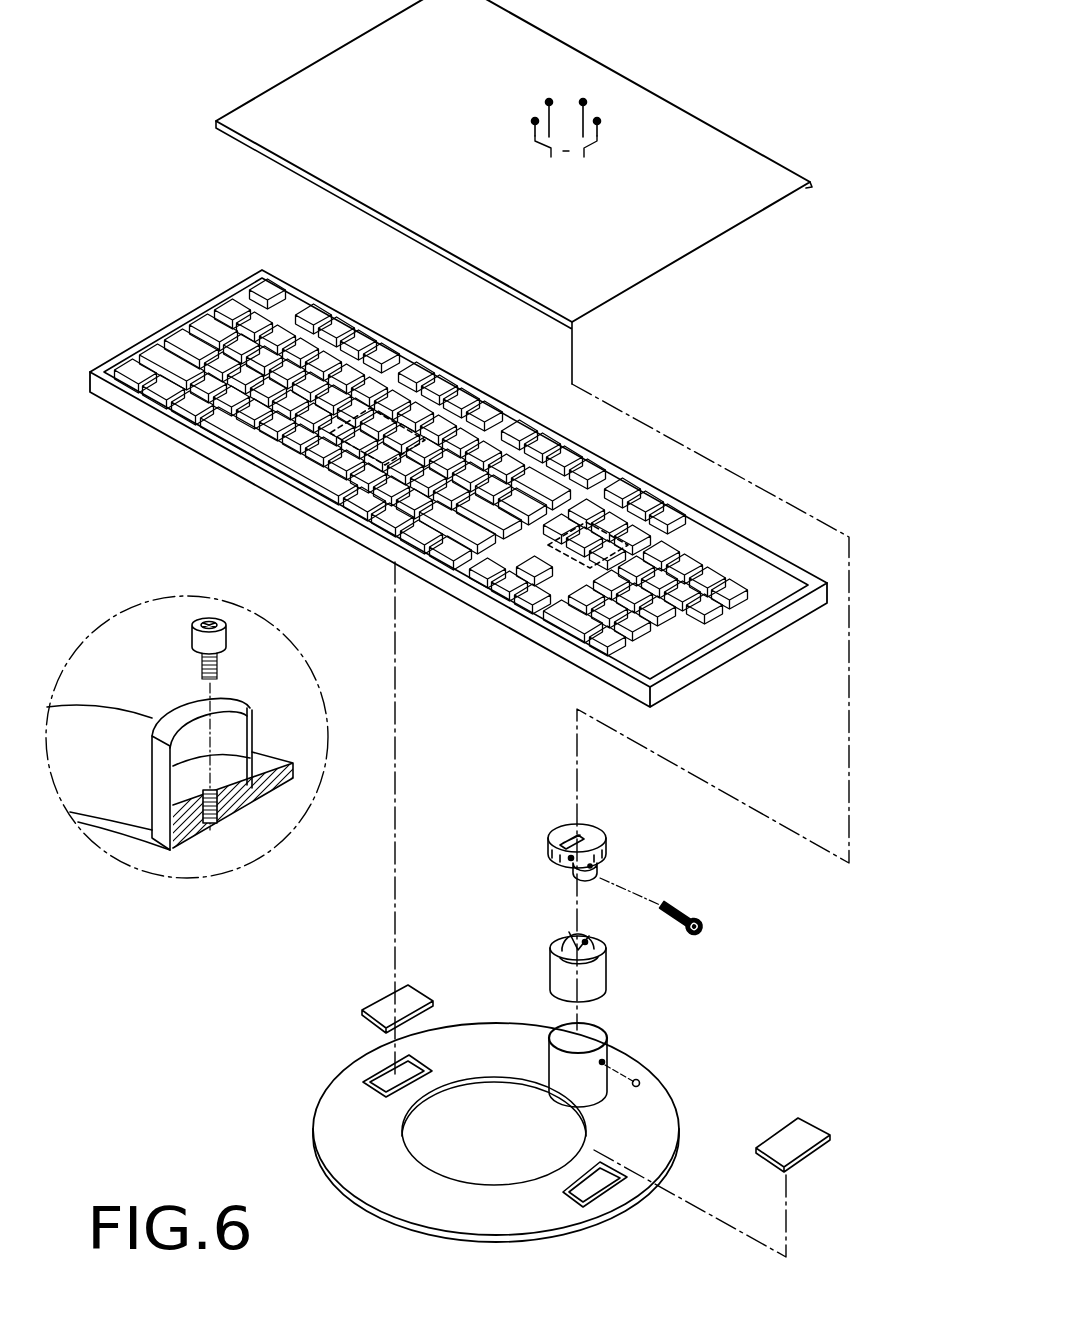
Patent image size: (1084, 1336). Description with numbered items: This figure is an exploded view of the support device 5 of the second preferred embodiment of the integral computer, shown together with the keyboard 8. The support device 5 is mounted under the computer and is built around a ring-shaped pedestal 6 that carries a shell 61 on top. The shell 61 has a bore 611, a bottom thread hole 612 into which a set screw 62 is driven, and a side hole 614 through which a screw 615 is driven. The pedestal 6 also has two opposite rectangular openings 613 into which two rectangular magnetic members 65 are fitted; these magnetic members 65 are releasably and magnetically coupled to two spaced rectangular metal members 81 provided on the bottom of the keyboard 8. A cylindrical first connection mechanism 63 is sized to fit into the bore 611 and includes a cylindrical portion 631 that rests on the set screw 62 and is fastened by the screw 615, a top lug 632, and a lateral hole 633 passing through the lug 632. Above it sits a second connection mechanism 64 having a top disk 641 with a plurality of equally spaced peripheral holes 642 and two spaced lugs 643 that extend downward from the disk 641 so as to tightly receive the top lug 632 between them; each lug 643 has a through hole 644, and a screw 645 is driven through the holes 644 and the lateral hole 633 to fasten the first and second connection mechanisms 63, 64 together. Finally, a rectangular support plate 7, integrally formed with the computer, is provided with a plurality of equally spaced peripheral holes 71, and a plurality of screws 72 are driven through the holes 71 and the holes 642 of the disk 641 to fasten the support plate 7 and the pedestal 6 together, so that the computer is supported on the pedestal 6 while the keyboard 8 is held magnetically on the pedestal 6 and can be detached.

The support device 5 is at (150, 565).
The ring-shaped pedestal 6 is at (345, 1127).
The rectangular support plate 7 is at (742, 162).
The keyboard 8 is at (386, 542).
The shell 61 is at (164, 788).
The set screw 62 is at (200, 652).
The cylindrical first connection mechanism 63 is at (508, 940).
The second connection mechanism 64 is at (552, 808).
The rectangular magnetic members 65 is at (385, 994).
The peripheral holes 71 is at (585, 143).
The screws 72 is at (583, 104).
The rectangular metal members 81 is at (300, 455).
The bore 611 is at (228, 732).
The bottom thread hole 612 is at (222, 815).
The rectangular openings 613 is at (380, 1074).
The side hole 614 is at (605, 1063).
The screw 615 is at (640, 1083).
The cylindrical portion 631 is at (552, 980).
The top lug 632 is at (561, 942).
The lateral hole 633 is at (600, 970).
The top disk 641 is at (557, 841).
The peripheral holes 642 is at (592, 825).
The lugs 643 is at (600, 870).
The through hole 644 is at (593, 880).
The screw 645 is at (682, 905).